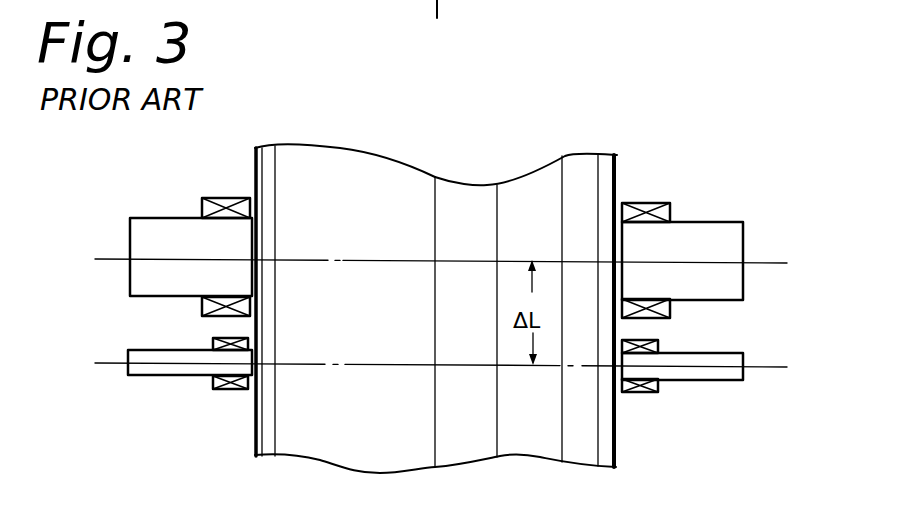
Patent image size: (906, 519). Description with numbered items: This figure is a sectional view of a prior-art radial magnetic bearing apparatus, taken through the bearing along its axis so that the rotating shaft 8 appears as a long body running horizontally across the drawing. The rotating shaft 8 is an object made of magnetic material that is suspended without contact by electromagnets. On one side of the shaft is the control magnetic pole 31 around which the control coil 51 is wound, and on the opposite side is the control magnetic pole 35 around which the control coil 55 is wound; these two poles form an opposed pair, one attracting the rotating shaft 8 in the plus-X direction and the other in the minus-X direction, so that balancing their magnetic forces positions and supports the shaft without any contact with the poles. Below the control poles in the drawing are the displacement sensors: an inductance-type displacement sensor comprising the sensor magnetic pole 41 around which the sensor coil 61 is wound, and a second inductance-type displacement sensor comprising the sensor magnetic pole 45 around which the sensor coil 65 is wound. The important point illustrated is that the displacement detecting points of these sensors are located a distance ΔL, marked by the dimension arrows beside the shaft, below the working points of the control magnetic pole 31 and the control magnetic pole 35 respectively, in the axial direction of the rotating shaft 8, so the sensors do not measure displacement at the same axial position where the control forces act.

The rotating shaft 8 is at (578, 183).
The control magnetic pole 31 is at (713, 238).
The control magnetic pole 35 is at (145, 240).
The sensor magnetic pole 41 is at (715, 373).
The sensor magnetic pole 45 is at (142, 372).
The control coil 51 is at (650, 212).
The control coil 55 is at (223, 200).
The sensor coil 61 is at (638, 393).
The sensor coil 65 is at (228, 390).